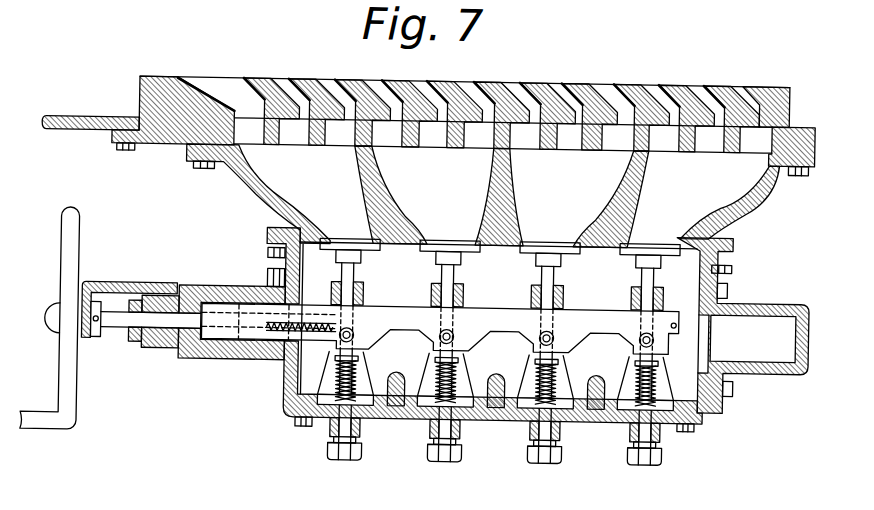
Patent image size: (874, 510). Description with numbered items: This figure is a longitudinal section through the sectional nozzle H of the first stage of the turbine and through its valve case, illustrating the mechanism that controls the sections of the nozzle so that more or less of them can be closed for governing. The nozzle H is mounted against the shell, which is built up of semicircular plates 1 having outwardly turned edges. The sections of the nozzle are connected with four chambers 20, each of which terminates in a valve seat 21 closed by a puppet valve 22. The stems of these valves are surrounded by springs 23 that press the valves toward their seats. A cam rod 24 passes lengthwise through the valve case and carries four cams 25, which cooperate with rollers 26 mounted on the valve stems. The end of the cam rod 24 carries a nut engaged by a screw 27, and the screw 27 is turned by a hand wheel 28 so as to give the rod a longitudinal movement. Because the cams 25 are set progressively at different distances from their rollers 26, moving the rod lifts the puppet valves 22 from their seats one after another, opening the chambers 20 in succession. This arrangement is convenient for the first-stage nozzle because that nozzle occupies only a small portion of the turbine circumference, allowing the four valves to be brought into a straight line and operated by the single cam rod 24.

The semicircular plates 1 is at (92, 106).
The sectional nozzle H is at (475, 78).
The chambers 20 is at (482, 197).
The valve seats 21 is at (325, 238).
The puppet valves 22 is at (378, 252).
The springs 23 is at (702, 397).
The cam rod 24 is at (602, 326).
The cams 25 is at (205, 382).
The rollers 26 is at (455, 331).
The screw 27 is at (265, 357).
The hand wheel 28 is at (79, 405).